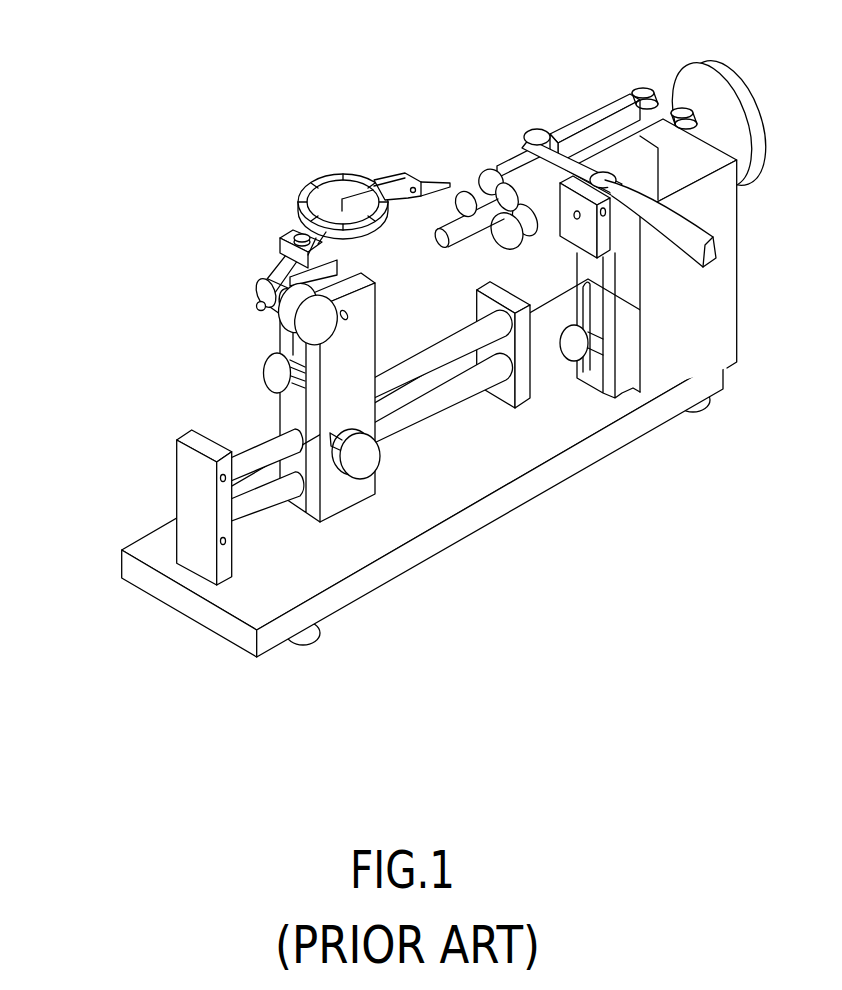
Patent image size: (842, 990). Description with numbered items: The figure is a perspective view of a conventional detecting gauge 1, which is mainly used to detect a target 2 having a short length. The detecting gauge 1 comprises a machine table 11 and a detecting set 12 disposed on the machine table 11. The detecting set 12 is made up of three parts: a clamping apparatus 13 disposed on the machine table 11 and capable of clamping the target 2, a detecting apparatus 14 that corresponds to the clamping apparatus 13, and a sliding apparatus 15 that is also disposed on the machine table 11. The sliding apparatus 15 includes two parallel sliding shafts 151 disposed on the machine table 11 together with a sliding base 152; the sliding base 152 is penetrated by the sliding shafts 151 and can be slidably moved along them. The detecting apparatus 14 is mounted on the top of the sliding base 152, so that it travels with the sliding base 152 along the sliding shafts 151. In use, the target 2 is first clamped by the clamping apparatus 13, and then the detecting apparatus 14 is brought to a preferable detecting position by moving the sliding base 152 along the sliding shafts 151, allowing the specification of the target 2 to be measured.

The detecting gauge 1 is at (105, 233).
The target 2 is at (474, 212).
The machine table 11 is at (497, 453).
The detecting set 12 is at (525, 106).
The clamping apparatus 13 is at (557, 153).
The detecting apparatus 14 is at (333, 192).
The sliding apparatus 15 is at (251, 442).
The sliding shafts 151 is at (413, 417).
The sliding base 152 is at (333, 487).